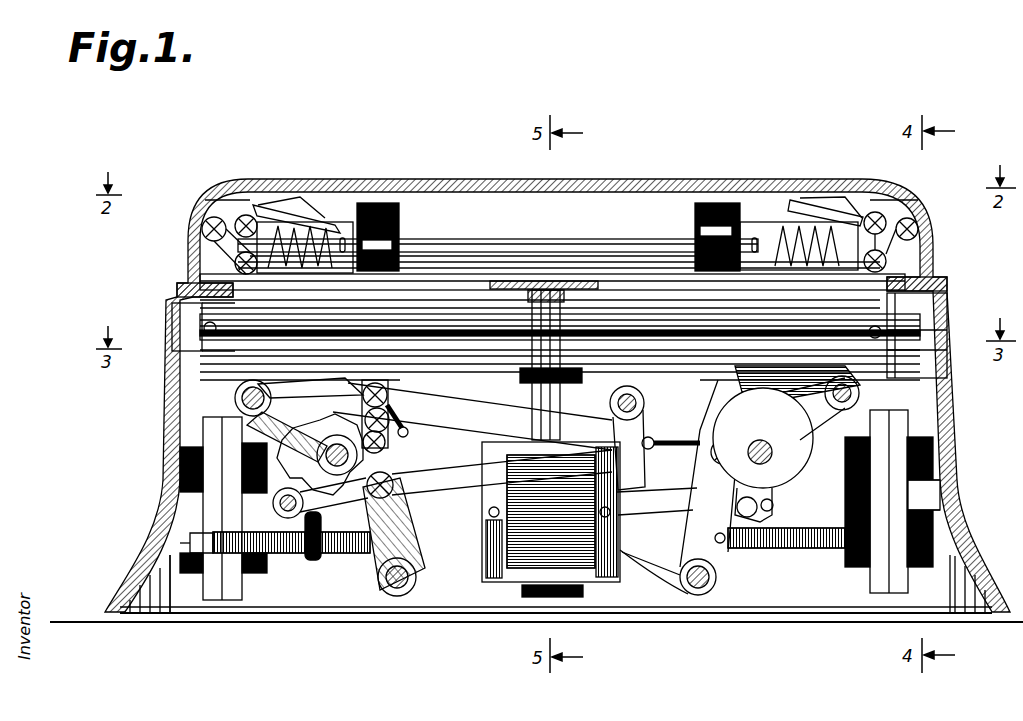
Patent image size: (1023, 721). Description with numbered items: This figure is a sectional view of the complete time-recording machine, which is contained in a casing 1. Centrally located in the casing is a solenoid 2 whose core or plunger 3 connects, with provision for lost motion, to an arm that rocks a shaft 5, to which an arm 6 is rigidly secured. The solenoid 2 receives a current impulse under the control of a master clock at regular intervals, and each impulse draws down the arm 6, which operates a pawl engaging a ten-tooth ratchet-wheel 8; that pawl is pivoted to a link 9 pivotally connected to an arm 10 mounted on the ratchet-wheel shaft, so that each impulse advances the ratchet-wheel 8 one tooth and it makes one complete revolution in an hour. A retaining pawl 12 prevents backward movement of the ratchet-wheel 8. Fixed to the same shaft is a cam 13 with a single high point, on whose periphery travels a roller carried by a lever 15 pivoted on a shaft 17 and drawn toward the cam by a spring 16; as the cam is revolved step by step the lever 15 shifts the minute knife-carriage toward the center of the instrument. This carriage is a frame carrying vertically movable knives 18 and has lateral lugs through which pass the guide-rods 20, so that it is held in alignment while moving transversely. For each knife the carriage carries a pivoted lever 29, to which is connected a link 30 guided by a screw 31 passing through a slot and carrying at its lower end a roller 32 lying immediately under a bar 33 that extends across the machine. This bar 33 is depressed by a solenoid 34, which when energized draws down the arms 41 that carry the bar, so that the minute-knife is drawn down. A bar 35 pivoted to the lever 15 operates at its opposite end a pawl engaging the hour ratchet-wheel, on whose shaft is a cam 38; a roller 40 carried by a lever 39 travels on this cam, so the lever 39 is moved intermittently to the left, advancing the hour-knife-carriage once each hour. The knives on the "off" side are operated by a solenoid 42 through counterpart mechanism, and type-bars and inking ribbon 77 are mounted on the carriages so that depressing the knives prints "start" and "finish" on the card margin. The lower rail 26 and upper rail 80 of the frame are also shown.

The casing 1 is at (950, 416).
The solenoid 2 is at (520, 548).
The core or plunger 3 is at (534, 429).
The shaft 5 is at (645, 403).
The arm 6 is at (452, 400).
The ten-tooth ratchet-wheel 8 is at (335, 435).
The link 9 is at (360, 393).
The arm 10 is at (402, 437).
The retaining pawl 12 is at (298, 440).
The cam 13 is at (322, 550).
The lever 15 is at (410, 514).
The spring 16 is at (296, 555).
The shaft 17 is at (418, 586).
The knives 18 is at (305, 224).
The guide-rods 20 is at (520, 243).
The lower rail 26 is at (380, 364).
The pivoted lever 29 is at (280, 206).
The link 30 is at (230, 240).
The screw 31 is at (200, 280).
The roller 32 is at (182, 340).
The bar 33 is at (462, 314).
The solenoid 34 is at (910, 464).
The bar 35 is at (405, 476).
The cam 38 is at (786, 444).
The lever 39 is at (693, 540).
The roller 40 is at (712, 458).
The arms 41 is at (178, 292).
The solenoid 42 is at (170, 470).
The type-bars and inking ribbon 77 is at (399, 218).
The upper rail 80 is at (640, 292).